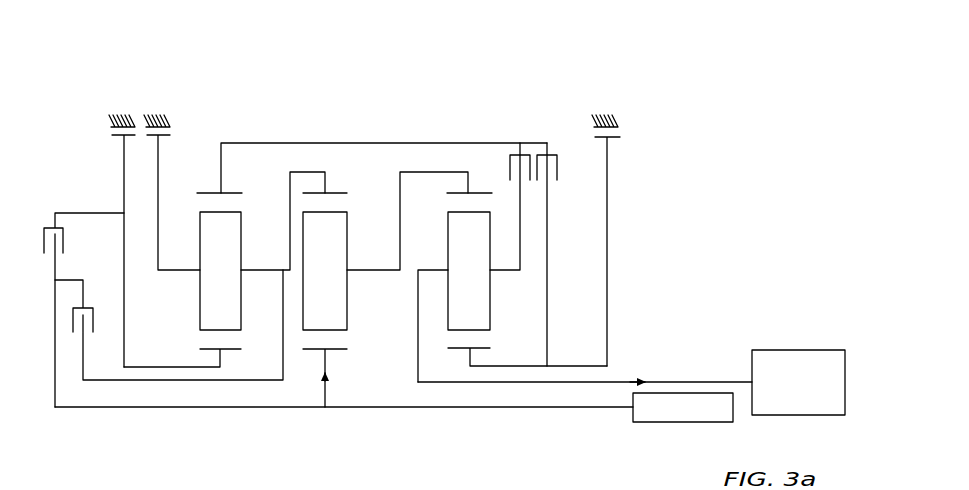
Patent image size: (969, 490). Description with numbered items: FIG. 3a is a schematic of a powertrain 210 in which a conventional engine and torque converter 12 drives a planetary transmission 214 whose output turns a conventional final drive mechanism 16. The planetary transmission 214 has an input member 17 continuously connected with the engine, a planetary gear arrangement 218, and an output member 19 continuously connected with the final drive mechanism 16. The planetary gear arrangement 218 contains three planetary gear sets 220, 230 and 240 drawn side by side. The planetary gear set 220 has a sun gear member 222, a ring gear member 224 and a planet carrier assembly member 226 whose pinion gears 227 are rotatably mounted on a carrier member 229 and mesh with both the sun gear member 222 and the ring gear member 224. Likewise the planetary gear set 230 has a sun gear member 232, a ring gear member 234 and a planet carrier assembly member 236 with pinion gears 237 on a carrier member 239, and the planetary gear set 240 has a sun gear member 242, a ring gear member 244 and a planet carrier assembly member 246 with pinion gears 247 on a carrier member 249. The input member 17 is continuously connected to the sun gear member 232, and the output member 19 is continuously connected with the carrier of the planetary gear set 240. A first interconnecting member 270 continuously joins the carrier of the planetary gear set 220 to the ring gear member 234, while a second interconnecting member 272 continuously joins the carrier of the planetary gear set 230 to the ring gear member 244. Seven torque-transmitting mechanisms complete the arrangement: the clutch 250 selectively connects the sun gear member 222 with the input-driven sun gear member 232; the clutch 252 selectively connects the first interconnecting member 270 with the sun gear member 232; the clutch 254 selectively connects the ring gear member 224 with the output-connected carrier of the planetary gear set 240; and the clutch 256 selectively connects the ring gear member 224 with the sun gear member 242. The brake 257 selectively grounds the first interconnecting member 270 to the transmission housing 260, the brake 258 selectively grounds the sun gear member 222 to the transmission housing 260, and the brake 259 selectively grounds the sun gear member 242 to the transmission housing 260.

The engine and torque converter 12 is at (697, 423).
The final drive mechanism 16 is at (805, 349).
The input member 17 is at (548, 408).
The output member 19 is at (618, 381).
The powertrain 210 is at (470, 78).
The planetary transmission 214 is at (520, 85).
The planetary gear arrangement 218 is at (233, 88).
The planetary gear set 220 is at (212, 351).
The sun gear member 222 is at (228, 352).
The ring gear member 224 is at (198, 194).
The planet carrier assembly member 226 is at (247, 268).
The pinion gears 227 is at (220, 271).
The carrier member 229 is at (258, 272).
The planetary gear set 230 is at (318, 352).
The sun gear member 232 is at (333, 352).
The ring gear member 234 is at (341, 196).
The planet carrier assembly member 236 is at (350, 268).
The pinion gears 237 is at (325, 271).
The carrier member 239 is at (378, 270).
The planetary gear set 240 is at (463, 357).
The sun gear member 242 is at (478, 350).
The ring gear member 244 is at (462, 193).
The planet carrier assembly member 246 is at (442, 268).
The pinion gears 247 is at (469, 271).
The carrier member 249 is at (428, 270).
The clutch 250 is at (62, 256).
The clutch 252 is at (78, 335).
The clutch 254 is at (513, 183).
The clutch 256 is at (556, 187).
The brake 257 is at (177, 136).
The brake 258 is at (108, 133).
The brake 259 is at (627, 139).
The transmission housing 260 is at (113, 114).
The first interconnecting member 270 is at (316, 169).
The second interconnecting member 272 is at (458, 170).